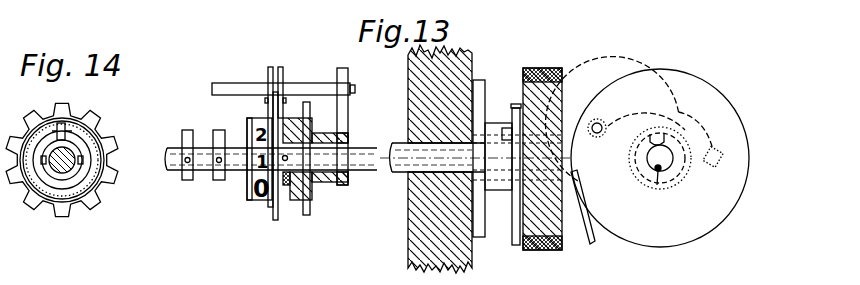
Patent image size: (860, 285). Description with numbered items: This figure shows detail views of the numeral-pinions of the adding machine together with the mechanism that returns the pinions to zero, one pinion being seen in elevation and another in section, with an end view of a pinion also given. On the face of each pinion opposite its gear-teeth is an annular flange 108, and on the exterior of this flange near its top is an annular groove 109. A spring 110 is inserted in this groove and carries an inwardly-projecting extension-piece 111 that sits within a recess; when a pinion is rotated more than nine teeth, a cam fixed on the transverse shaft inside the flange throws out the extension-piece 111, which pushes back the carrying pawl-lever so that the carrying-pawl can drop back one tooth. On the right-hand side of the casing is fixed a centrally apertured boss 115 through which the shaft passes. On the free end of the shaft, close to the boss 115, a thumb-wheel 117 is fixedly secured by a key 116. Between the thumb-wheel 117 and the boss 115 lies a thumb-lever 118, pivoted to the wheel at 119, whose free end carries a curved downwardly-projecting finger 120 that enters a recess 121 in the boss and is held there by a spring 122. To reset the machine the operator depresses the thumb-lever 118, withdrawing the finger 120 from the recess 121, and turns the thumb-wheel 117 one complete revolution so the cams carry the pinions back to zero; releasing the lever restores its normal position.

In FIG. 13, the annular flange 108 is at (283, 190).
In FIG. 13, the annular groove 109 is at (291, 203).
In FIG. 13, the spring 110 is at (276, 206).
In FIG. 13, the extension-piece 111 is at (290, 132).
In FIG. 14, the extension-piece 111 is at (66, 126).
In FIG. 13, the boss 115 is at (480, 80).
In FIG. 13, the key 116 is at (657, 185).
In FIG. 13, the thumb-wheel 117 is at (548, 68).
In FIG. 13, the thumb-lever 118 is at (513, 238).
In FIG. 13, the pivot 119 is at (505, 122).
In FIG. 13, the finger 120 is at (672, 127).
In FIG. 13, the recess 121 is at (657, 139).
In FIG. 13, the spring 122 is at (674, 107).